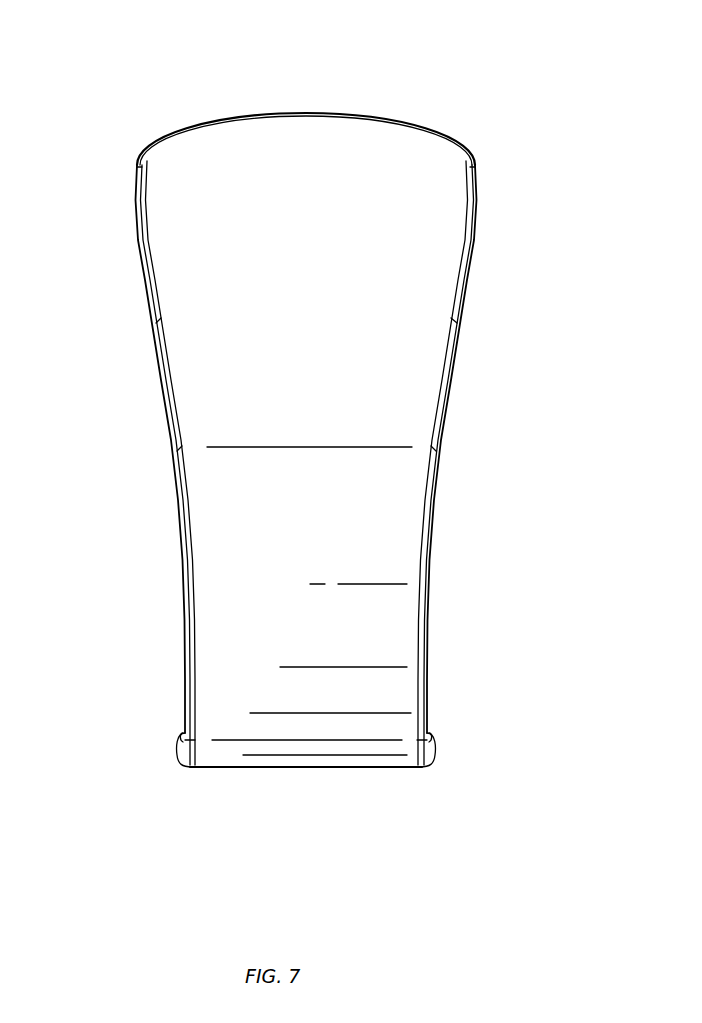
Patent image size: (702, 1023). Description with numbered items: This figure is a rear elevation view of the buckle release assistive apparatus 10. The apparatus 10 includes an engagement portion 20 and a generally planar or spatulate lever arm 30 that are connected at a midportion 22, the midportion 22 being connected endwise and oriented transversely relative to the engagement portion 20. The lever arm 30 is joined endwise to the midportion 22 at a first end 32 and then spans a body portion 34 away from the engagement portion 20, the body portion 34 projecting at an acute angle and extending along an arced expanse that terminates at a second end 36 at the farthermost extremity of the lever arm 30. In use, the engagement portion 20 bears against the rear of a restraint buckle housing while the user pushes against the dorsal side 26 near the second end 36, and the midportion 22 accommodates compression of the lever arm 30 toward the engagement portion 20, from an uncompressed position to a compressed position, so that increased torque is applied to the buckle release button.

The apparatus 10 is at (545, 117).
The engagement portion 20 is at (174, 726).
The midportion 22 is at (303, 770).
The dorsal side 26 is at (343, 281).
The lever arm 30 is at (195, 260).
The first end 32 is at (325, 757).
The body portion 34 is at (358, 502).
The second end 36 is at (182, 116).